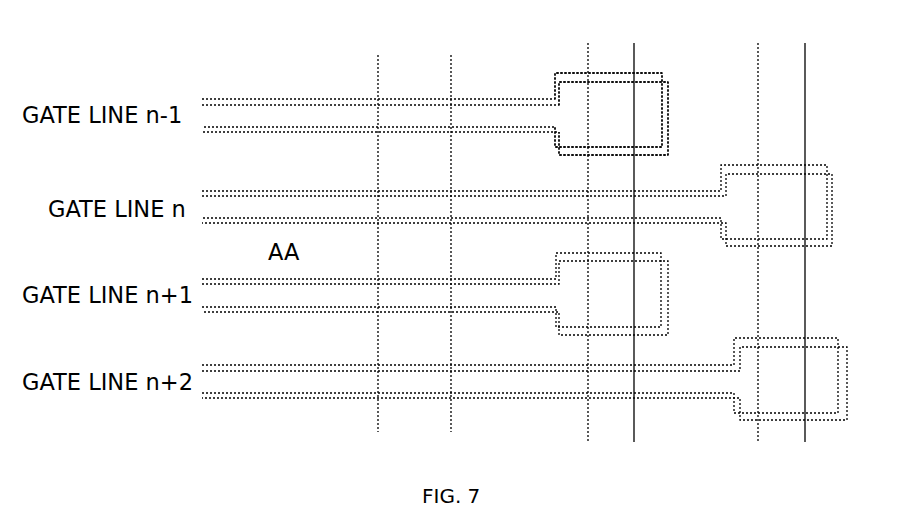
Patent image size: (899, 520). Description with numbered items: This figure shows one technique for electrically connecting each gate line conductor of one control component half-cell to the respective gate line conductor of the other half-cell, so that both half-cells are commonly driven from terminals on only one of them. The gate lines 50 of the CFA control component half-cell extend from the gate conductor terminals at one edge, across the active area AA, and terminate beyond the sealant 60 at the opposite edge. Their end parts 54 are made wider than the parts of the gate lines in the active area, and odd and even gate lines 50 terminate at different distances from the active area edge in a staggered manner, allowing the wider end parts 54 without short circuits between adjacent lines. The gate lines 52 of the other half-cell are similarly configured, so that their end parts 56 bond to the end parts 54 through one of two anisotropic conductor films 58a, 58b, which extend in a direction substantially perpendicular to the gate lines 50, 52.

The gate lines 50 is at (273, 97).
The gate lines 52 is at (267, 132).
The end parts 54 is at (647, 70).
The end parts 56 is at (670, 127).
The anisotropic conductor film 58a is at (602, 57).
The anisotropic conductor film 58b is at (795, 115).
The sealant 60 is at (408, 73).